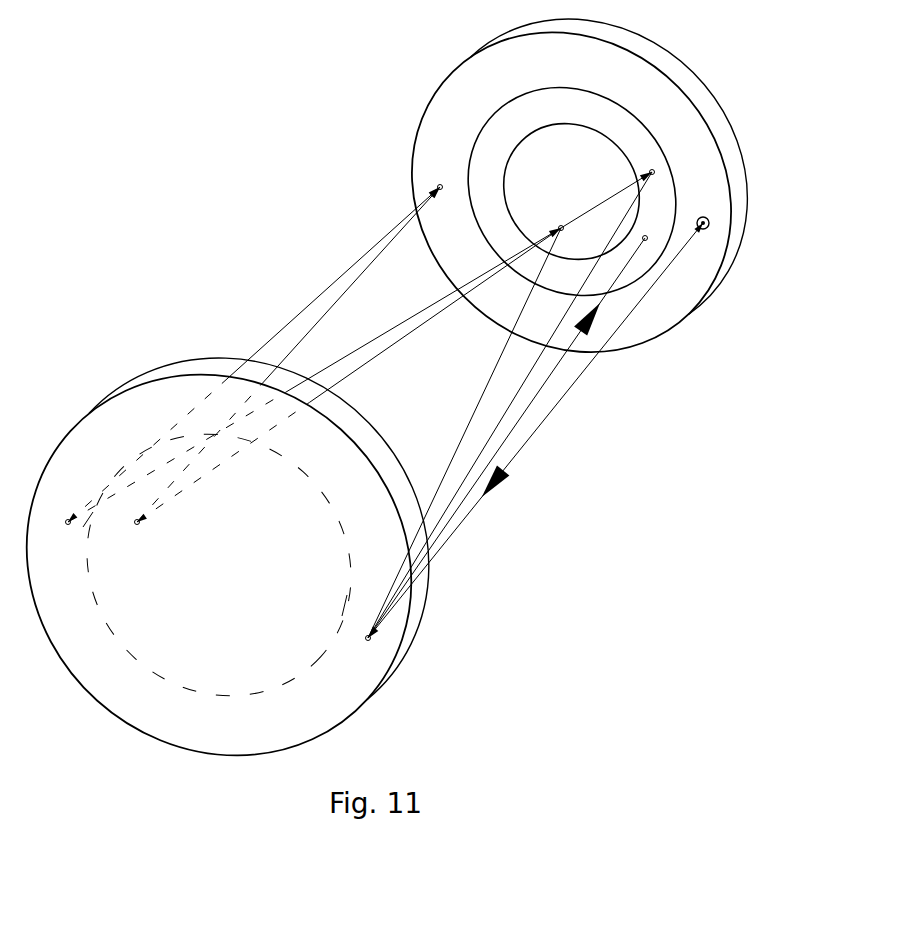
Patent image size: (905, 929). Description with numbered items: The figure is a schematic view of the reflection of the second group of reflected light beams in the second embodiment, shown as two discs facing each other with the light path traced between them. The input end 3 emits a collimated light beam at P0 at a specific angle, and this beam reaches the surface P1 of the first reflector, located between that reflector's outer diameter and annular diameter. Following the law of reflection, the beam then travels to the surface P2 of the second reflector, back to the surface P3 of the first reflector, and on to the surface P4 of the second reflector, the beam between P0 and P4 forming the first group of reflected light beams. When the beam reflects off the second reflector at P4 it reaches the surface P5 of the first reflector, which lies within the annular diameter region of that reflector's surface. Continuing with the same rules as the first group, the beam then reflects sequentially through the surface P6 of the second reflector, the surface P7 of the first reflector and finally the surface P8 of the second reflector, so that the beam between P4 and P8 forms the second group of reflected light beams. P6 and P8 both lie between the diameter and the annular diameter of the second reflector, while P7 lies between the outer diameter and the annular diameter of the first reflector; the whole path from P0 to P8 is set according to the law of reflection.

The input end 3 is at (703, 232).
The element P0 is at (544, 414).
The surface P1 is at (362, 651).
The surface P2 is at (510, 405).
The surface P3 is at (305, 372).
The surface P4 is at (437, 178).
The surface P5 is at (336, 372).
The surface P6 is at (511, 391).
The surface P7 is at (358, 604).
The surface P8 is at (519, 421).